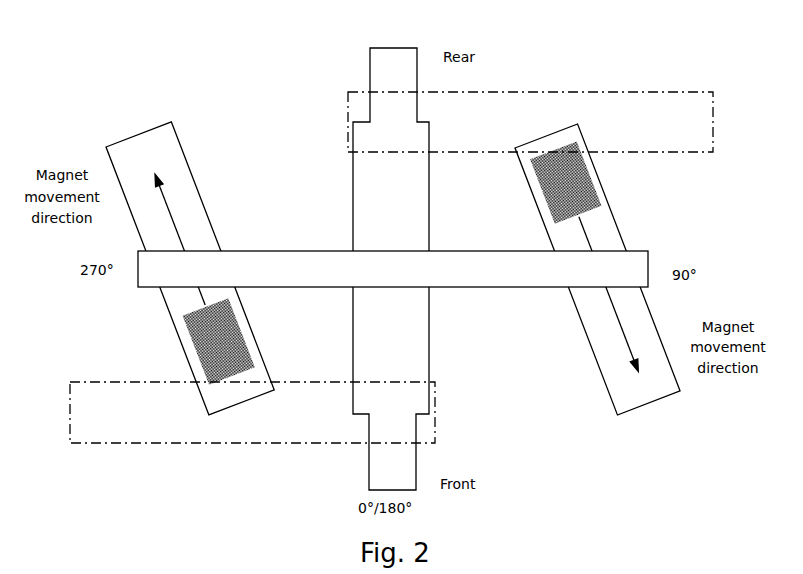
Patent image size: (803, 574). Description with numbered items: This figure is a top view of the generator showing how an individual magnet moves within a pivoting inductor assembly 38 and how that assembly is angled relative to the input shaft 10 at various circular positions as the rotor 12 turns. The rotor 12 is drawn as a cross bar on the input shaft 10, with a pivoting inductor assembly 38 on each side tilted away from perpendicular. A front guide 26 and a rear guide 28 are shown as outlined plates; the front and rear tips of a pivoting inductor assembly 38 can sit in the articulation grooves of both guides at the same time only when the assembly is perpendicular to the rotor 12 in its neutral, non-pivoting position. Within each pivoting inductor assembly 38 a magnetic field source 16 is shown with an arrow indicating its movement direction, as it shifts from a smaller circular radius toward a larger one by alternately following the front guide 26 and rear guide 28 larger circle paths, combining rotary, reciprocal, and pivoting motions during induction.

The input shaft 10 is at (370, 65).
The rotor 12 is at (497, 288).
The magnetic field source 16 is at (186, 338).
The front guide 26 is at (119, 443).
The rear guide 28 is at (643, 92).
The pivoting inductor assembly 38 is at (135, 136).